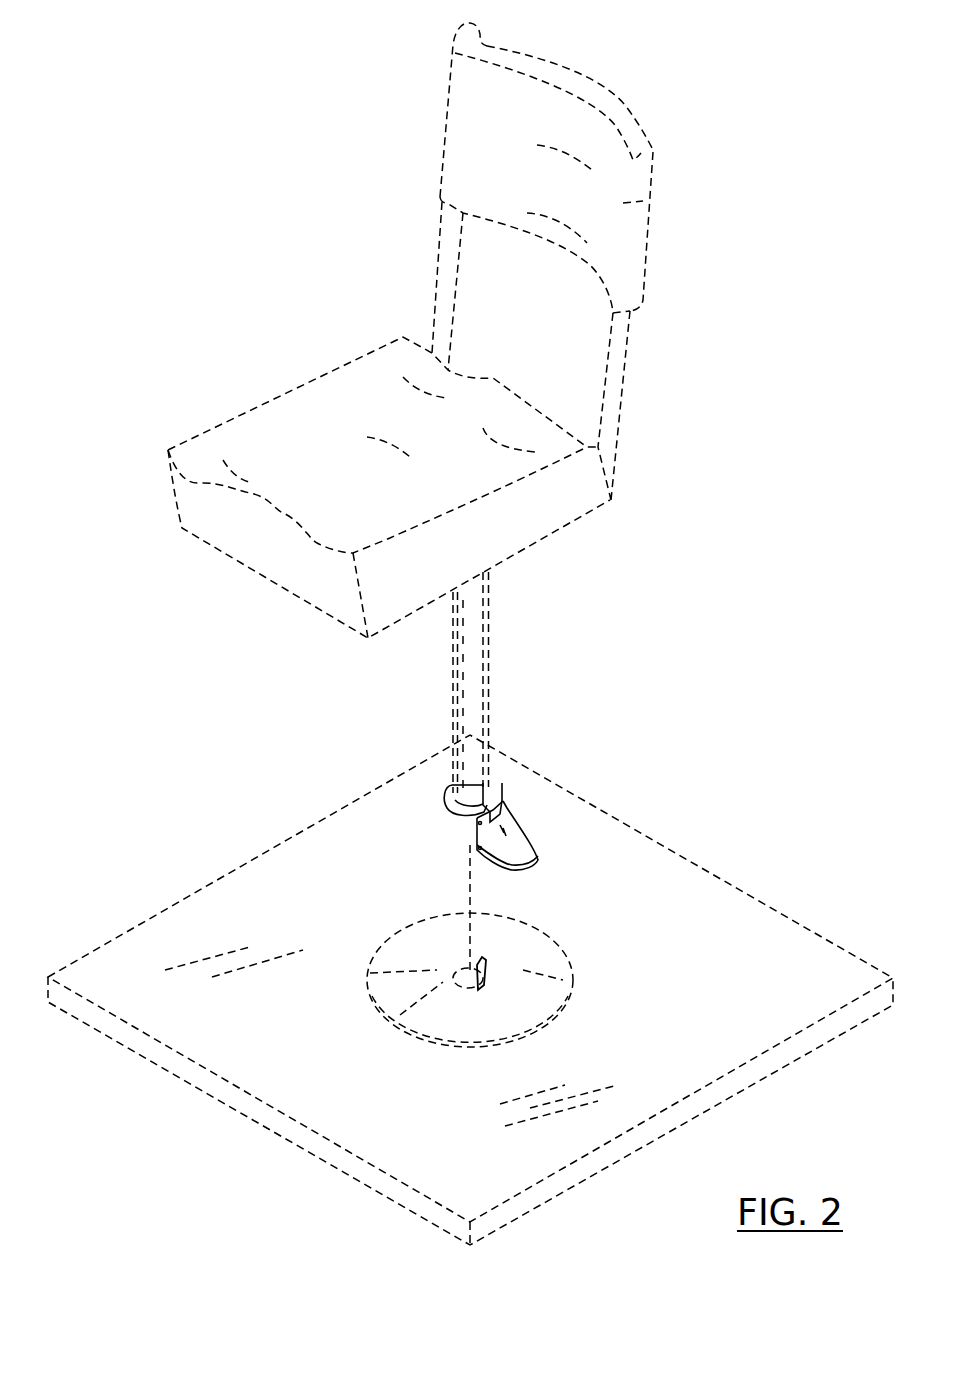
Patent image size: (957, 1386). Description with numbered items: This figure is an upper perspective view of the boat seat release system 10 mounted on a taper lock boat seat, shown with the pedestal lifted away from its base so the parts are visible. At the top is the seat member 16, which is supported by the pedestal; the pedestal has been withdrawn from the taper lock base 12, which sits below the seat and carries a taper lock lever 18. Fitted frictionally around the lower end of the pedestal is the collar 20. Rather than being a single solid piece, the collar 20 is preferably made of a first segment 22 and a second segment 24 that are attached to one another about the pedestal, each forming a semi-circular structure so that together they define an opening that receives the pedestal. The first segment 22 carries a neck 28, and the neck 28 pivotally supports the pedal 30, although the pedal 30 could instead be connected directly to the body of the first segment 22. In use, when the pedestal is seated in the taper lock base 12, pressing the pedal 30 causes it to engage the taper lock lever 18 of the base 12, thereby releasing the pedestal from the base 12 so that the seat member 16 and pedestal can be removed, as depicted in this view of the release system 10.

The boat seat release system 10 is at (582, 745).
The taper lock base 12 is at (392, 950).
The seat member 16 is at (325, 400).
The taper lock lever 18 is at (476, 985).
The collar 20 is at (549, 763).
The first segment 22 is at (460, 832).
The second segment 24 is at (452, 792).
The neck 28 is at (502, 796).
The pedal 30 is at (525, 848).